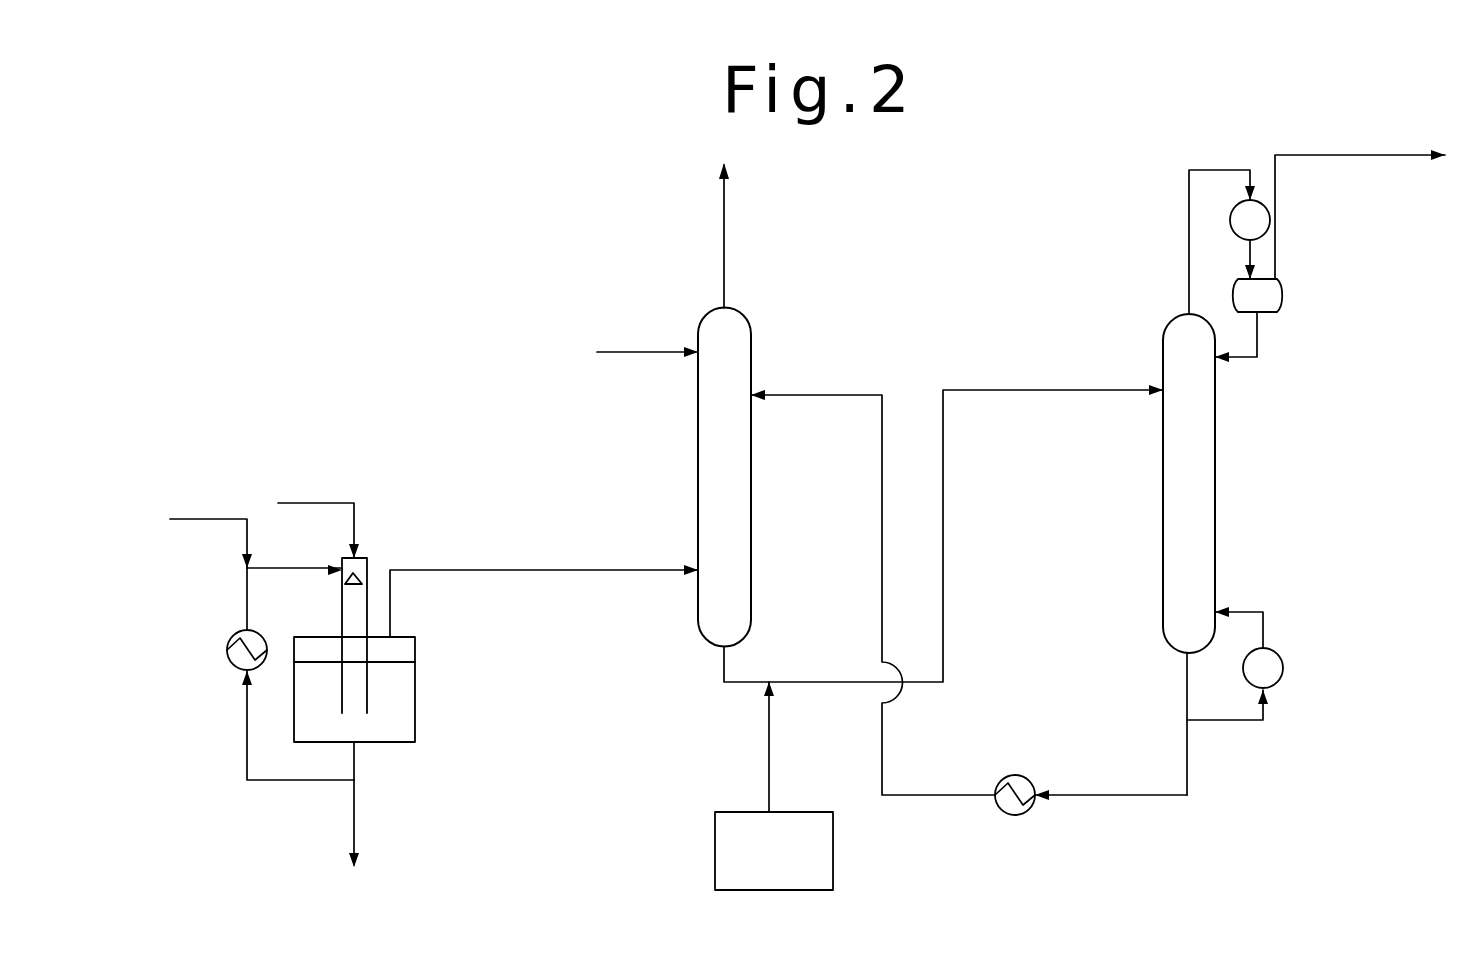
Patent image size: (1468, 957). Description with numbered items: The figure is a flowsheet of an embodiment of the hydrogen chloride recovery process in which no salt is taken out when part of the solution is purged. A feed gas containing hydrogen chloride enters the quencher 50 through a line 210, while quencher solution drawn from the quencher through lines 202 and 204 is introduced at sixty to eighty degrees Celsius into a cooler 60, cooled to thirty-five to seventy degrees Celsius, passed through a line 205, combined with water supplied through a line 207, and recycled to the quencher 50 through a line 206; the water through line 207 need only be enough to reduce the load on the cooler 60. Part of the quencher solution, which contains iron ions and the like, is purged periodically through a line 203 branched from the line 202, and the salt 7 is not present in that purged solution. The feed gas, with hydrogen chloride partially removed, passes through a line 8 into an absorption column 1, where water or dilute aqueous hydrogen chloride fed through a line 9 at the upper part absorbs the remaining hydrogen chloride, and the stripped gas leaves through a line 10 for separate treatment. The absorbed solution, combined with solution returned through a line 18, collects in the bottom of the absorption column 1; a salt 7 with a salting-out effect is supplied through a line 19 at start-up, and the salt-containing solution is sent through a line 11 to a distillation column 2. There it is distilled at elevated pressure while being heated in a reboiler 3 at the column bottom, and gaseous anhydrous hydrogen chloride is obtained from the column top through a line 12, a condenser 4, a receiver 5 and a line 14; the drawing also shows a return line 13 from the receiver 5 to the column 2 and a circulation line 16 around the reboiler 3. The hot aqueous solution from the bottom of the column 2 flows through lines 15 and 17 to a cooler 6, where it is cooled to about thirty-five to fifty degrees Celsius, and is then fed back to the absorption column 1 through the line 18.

The absorption column 1 is at (724, 477).
The distillation column 2 is at (1189, 483).
The reboiler 3 is at (1282, 683).
The condenser 4 is at (1230, 215).
The receiver 5 is at (1283, 293).
The cooler 6 is at (1003, 777).
The salt 7 is at (774, 851).
The line 8 is at (650, 568).
The line 9 is at (648, 350).
The line 10 is at (725, 268).
The line 11 is at (1005, 388).
The line 12 is at (1188, 222).
The reflux line 13 is at (1257, 338).
The line 14 is at (1287, 153).
The line 15 is at (1185, 678).
The recirculation line 16 is at (1218, 722).
The line 17 is at (1113, 797).
The line 18 is at (797, 392).
The line 19 is at (769, 763).
The quencher 50 is at (370, 558).
The cooler 60 is at (228, 657).
The line 202 is at (355, 772).
The line 203 is at (355, 827).
The line 204 is at (242, 730).
The line 205 is at (247, 600).
The line 206 is at (263, 562).
The line 207 is at (203, 522).
The line 210 is at (358, 518).